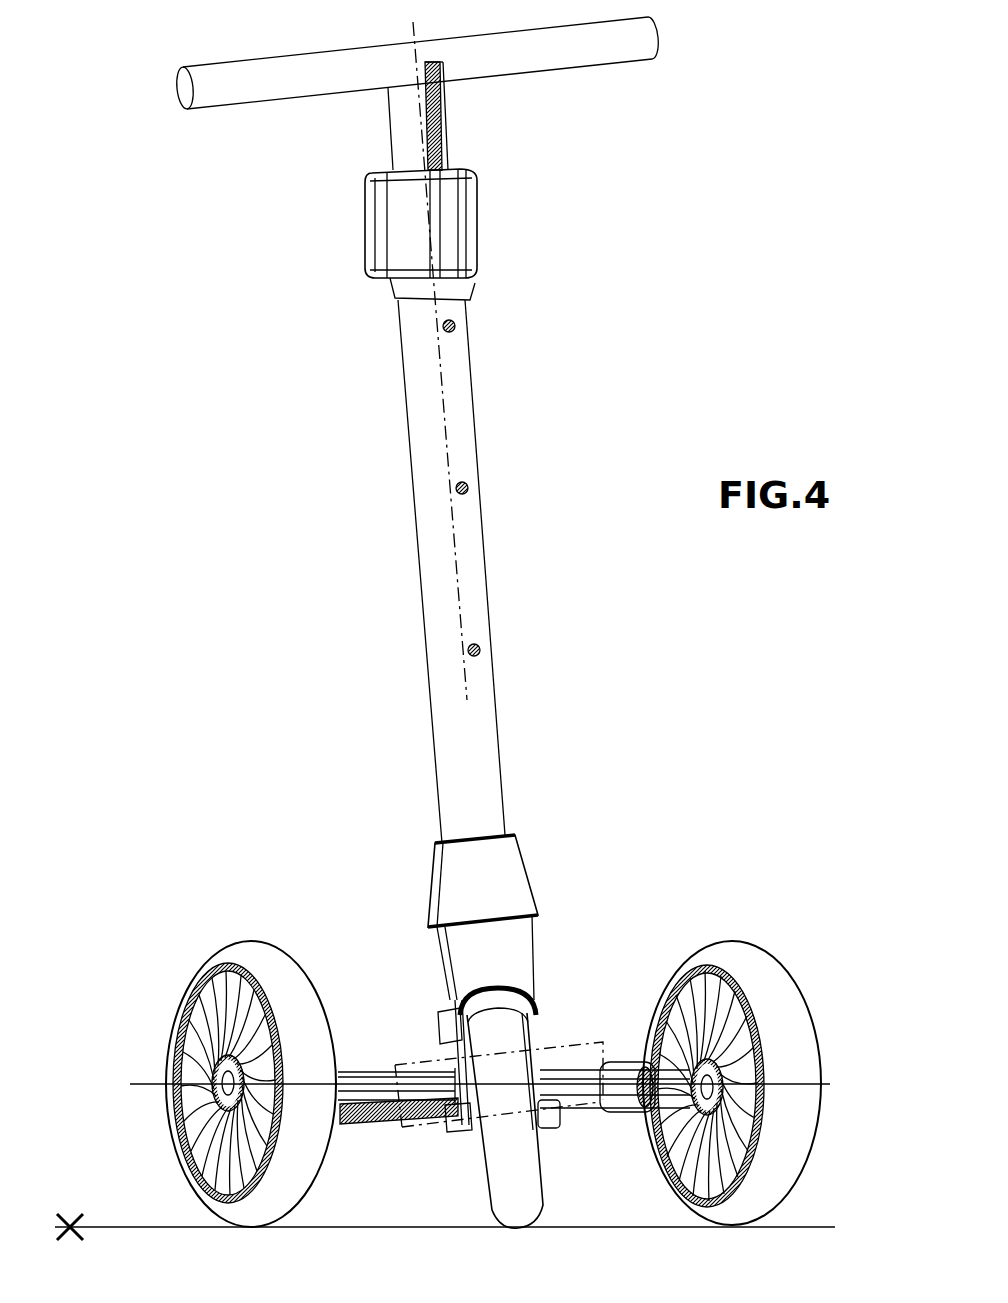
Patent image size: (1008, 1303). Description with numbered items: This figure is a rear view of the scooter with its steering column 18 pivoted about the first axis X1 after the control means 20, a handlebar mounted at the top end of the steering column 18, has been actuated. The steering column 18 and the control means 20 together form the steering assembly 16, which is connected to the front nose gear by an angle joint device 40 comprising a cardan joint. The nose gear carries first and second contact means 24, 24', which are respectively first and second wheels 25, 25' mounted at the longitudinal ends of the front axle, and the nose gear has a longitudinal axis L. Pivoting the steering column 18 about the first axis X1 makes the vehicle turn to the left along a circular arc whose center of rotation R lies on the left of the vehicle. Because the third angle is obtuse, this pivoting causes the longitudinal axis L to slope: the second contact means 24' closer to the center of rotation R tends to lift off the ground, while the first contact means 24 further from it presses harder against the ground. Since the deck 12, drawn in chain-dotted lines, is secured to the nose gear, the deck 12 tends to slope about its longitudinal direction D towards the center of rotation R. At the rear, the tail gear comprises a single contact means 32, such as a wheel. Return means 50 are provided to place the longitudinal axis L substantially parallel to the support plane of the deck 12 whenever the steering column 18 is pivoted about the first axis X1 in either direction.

The deck 12 is at (405, 1062).
The steering assembly 16 is at (521, 522).
The steering column 18 is at (425, 434).
The control means 20 is at (575, 78).
The first contact means 24 is at (733, 1043).
The second contact means 24' is at (240, 1027).
The first wheel 25 is at (756, 1083).
The second wheel 25' is at (243, 1071).
The single contact means 32 is at (497, 1180).
The angle joint device 40 is at (557, 1010).
The return means 50 is at (552, 1136).
The longitudinal direction D is at (500, 1085).
The longitudinal axis L is at (830, 1084).
The center of rotation R is at (70, 1216).
The first axis X1 is at (412, 33).